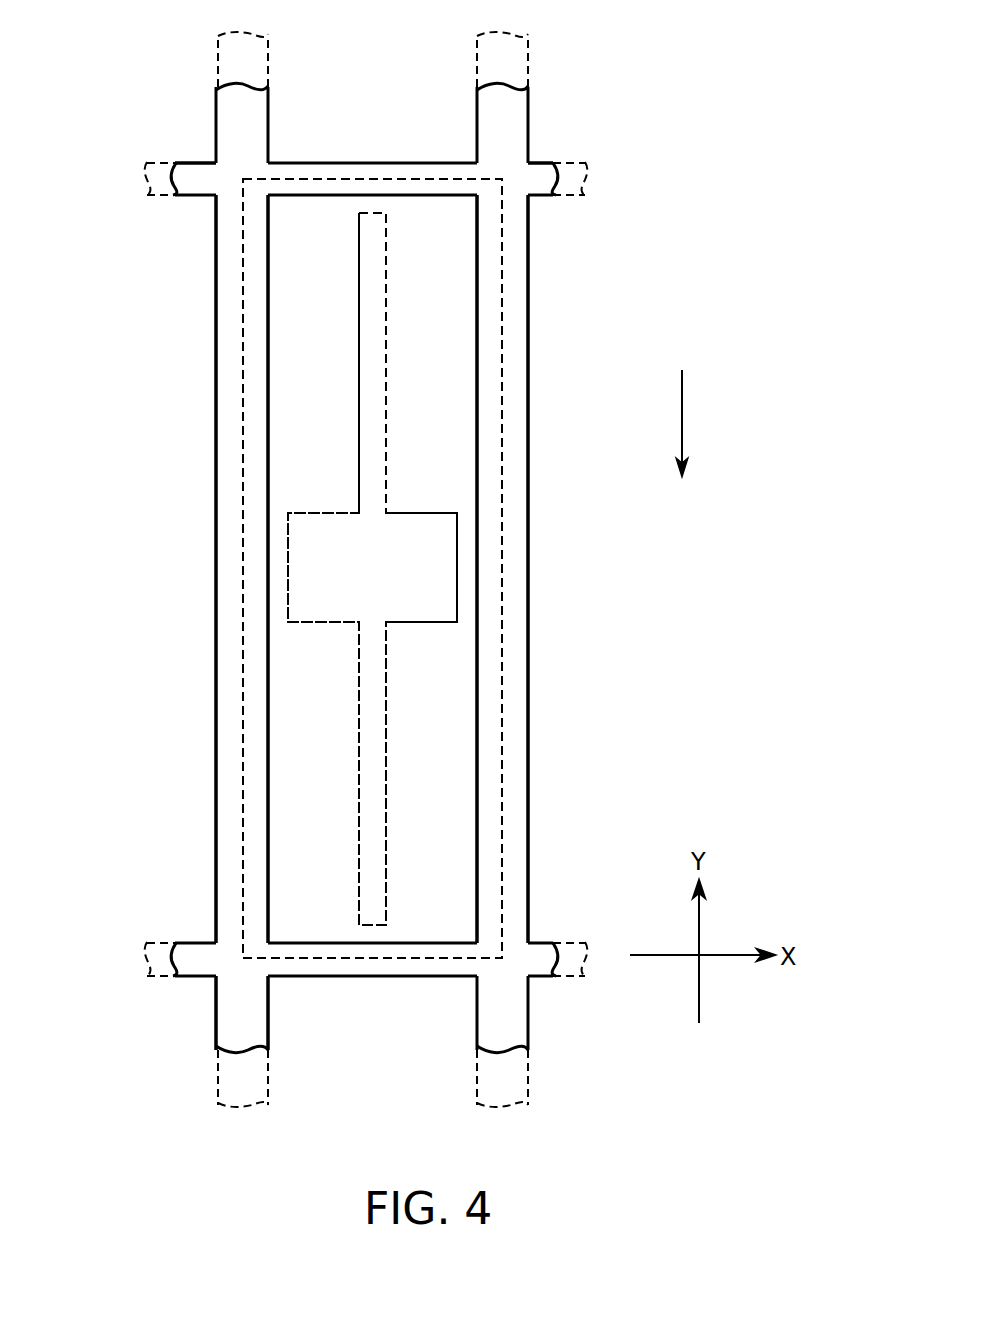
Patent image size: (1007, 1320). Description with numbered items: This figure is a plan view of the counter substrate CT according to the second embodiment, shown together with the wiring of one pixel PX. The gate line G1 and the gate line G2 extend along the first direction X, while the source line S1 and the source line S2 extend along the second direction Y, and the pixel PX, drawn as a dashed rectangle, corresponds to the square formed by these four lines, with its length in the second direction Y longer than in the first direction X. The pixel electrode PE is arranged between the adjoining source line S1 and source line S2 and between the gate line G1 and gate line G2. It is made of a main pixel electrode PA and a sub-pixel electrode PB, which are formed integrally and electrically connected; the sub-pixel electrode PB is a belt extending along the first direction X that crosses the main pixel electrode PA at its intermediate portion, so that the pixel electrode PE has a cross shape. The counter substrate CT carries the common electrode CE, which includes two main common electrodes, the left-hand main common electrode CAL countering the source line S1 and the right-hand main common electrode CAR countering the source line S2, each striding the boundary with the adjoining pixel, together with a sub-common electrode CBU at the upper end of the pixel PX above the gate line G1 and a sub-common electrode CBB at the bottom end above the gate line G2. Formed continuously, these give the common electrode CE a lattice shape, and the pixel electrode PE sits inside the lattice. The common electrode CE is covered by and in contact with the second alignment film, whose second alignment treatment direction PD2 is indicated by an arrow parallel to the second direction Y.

The source line S1 is at (216, 58).
The source line S2 is at (530, 58).
The gate line G1 is at (147, 183).
The gate line G2 is at (147, 960).
The sub-common electrode CBU is at (363, 163).
The sub-common electrode CBB is at (391, 976).
The main common electrode CAL is at (216, 866).
The main common electrode CAR is at (529, 701).
The pixel PX is at (502, 183).
The pixel electrode PE is at (387, 256).
The main pixel electrode PA is at (358, 290).
The sub-pixel electrode PB is at (416, 512).
The counter substrate CT is at (612, 101).
The common electrode CE is at (270, 1033).
The second alignment treatment direction PD2 is at (683, 418).